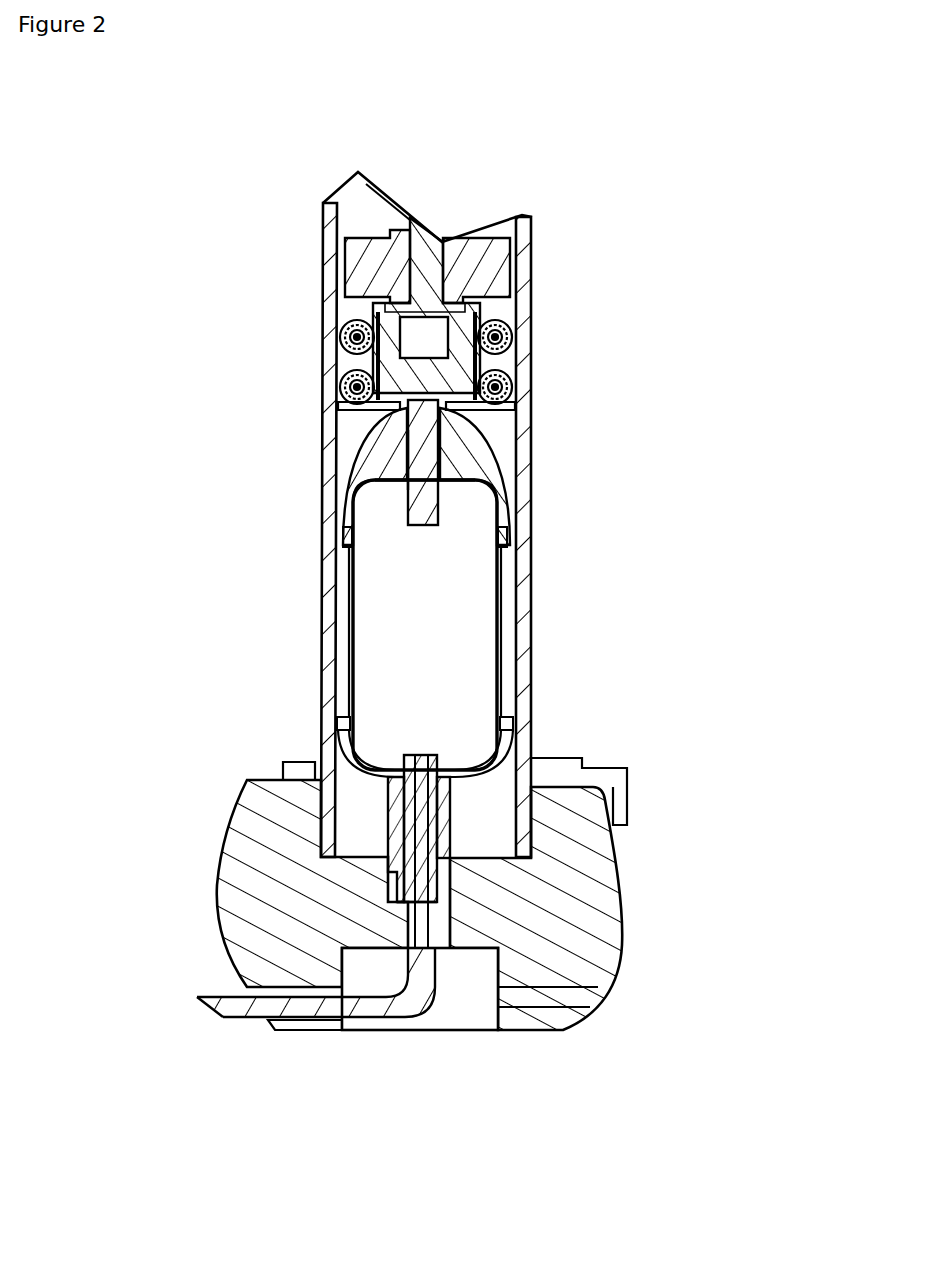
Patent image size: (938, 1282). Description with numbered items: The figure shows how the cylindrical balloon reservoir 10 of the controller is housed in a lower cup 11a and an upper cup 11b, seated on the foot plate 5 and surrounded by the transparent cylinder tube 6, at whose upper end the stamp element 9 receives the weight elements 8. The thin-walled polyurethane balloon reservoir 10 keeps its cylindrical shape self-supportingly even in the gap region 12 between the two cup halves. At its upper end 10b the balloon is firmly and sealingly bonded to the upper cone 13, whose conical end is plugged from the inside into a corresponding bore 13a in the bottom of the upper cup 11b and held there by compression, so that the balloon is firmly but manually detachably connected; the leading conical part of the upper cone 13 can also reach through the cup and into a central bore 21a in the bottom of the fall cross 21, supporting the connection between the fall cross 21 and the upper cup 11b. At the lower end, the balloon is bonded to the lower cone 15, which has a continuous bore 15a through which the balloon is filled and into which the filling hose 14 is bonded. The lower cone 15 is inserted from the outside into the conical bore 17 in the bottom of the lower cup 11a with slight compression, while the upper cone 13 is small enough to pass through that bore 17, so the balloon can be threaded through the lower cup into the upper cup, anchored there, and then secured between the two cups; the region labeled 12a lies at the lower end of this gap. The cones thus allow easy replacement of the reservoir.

The foot plate 5 is at (583, 933).
The cylinder tube 6 is at (520, 553).
The weight elements 8 is at (480, 268).
The stamp element 9 is at (425, 318).
The balloon reservoir 10 is at (433, 645).
The upper end of the balloon 10b is at (443, 467).
The lower cup 11a is at (457, 778).
The upper cup 11b is at (460, 443).
The gap region 12 is at (343, 618).
The sleeve end 12a is at (443, 793).
The upper cone 13 is at (447, 477).
The bore in the bottom of the upper cup 13a is at (405, 458).
The filling hose 14 is at (402, 1002).
The lower cone 15 is at (405, 828).
The continuous bore 15a is at (450, 867).
The conical bore 17 is at (397, 890).
The fall cross 21 is at (343, 353).
The central bore 21a is at (342, 424).